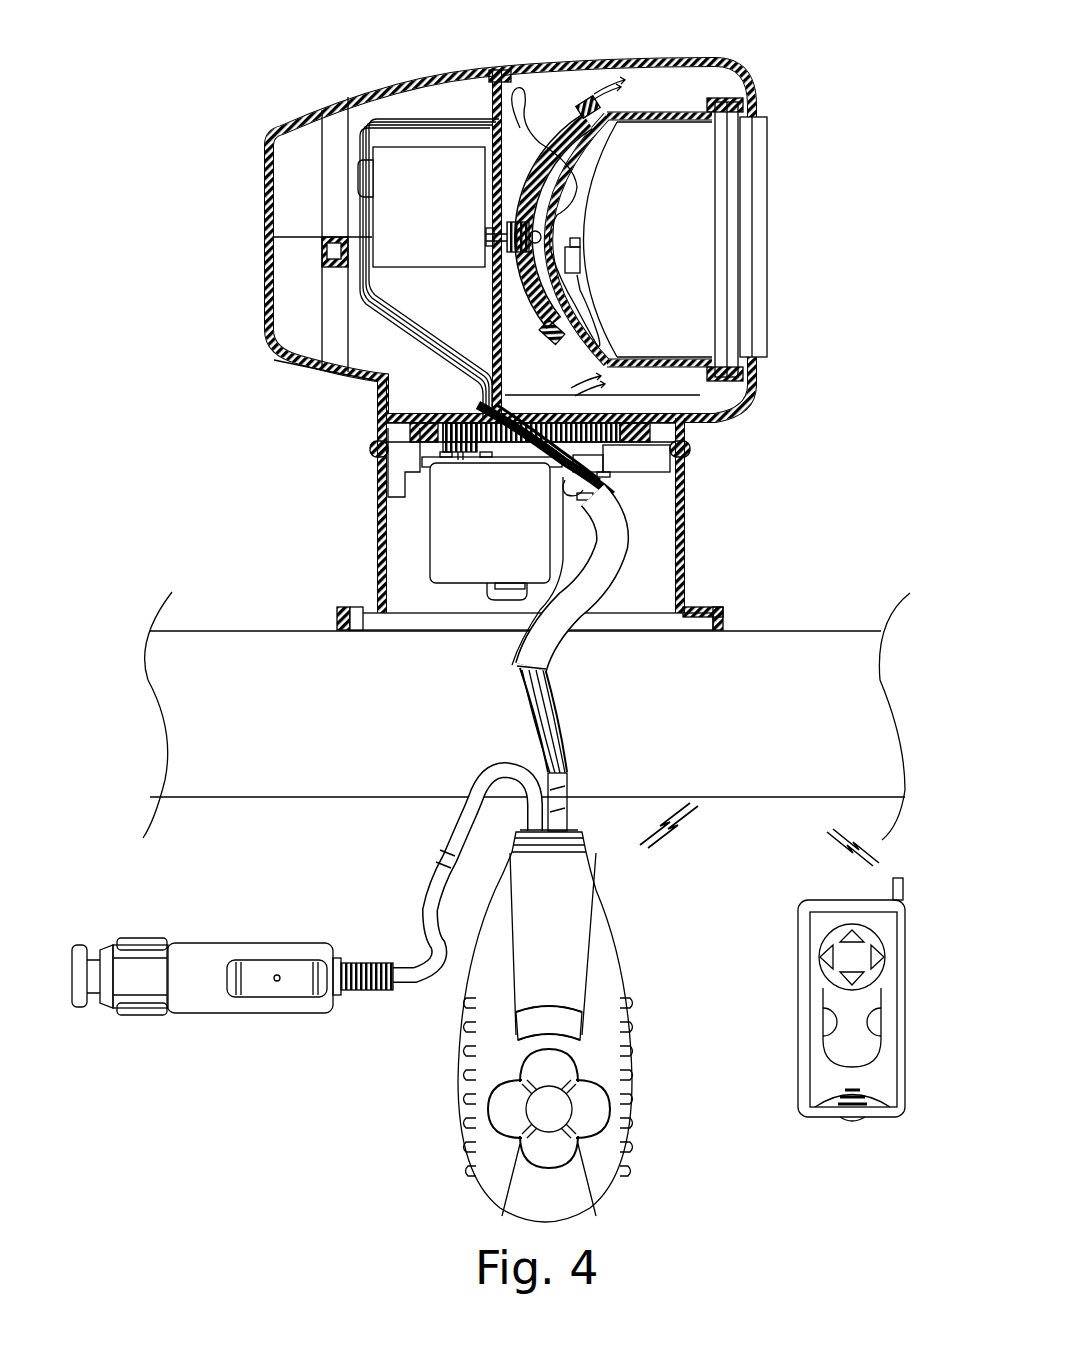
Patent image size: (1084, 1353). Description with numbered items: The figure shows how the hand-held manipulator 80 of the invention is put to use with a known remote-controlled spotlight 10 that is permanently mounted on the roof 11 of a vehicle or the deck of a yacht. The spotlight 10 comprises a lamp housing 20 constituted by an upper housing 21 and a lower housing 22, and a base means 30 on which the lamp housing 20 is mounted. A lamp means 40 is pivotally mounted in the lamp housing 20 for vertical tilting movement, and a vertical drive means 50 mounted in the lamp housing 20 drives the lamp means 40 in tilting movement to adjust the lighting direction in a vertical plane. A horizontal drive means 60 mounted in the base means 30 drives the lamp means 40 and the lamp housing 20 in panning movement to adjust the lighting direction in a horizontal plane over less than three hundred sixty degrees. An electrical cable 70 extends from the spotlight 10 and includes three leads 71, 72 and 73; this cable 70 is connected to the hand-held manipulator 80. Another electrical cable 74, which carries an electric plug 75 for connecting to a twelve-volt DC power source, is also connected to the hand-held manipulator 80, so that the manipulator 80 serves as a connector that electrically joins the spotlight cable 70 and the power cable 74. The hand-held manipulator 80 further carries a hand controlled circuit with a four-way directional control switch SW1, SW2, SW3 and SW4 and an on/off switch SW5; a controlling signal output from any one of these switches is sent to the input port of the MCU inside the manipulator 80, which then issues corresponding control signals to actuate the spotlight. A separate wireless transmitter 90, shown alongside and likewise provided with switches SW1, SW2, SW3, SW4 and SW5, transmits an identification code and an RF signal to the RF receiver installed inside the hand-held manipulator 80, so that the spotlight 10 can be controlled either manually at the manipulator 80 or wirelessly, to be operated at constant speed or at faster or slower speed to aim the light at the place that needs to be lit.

The remote-controlled spotlight 10 is at (304, 14).
The roof 11 is at (208, 697).
The lamp housing 20 is at (190, 190).
The upper housing 21 is at (267, 195).
The lower housing 22 is at (267, 277).
The base means 30 is at (683, 552).
The lamp means 40 is at (655, 244).
The vertical drive means 50 is at (443, 226).
The horizontal drive means 60 is at (502, 542).
The electrical cable 70 is at (607, 580).
The lead 71 is at (517, 90).
The lead 72 is at (370, 193).
The lead 73 is at (513, 603).
The electrical cable 74 is at (402, 878).
The electric plug 75 is at (205, 947).
The hand-held manipulator 80 is at (618, 958).
The wireless transmitter 90 is at (800, 984).
The directional control switch SW1 is at (564, 1067).
The directional control switch SW2 is at (549, 1153).
The directional control switch SW3 is at (498, 1111).
The directional control switch SW4 is at (600, 1111).
The on/off switch SW5 is at (556, 1016).